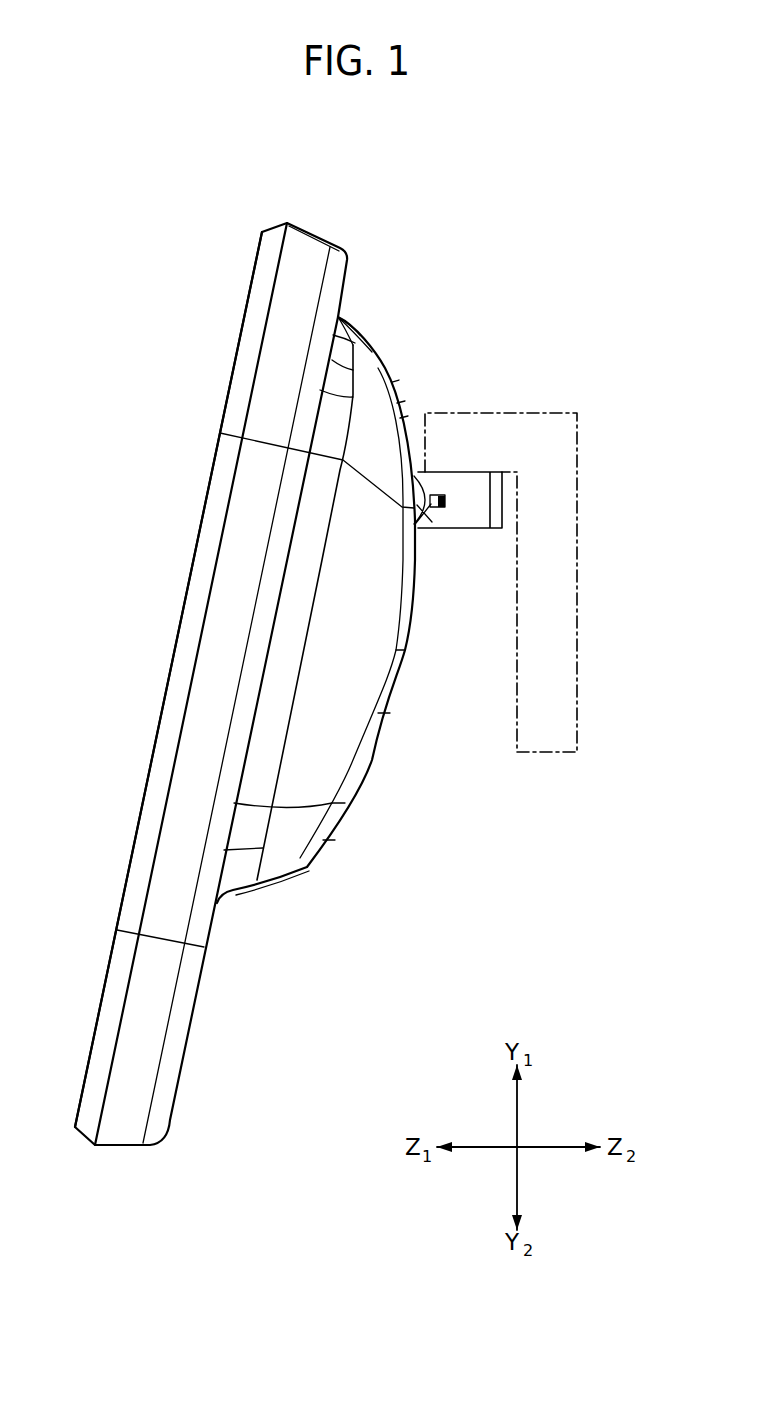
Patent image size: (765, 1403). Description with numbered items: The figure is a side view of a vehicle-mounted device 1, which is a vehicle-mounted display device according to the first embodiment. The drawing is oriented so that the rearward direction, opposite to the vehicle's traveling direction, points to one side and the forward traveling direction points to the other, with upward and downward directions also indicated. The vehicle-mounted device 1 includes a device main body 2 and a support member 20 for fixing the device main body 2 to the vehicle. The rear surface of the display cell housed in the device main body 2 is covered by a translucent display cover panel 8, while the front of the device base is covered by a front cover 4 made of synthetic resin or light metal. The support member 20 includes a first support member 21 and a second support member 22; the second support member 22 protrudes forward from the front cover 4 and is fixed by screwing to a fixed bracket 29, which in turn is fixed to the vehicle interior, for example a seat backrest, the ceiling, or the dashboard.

The vehicle-mounted device 1 is at (424, 218).
The device main body 2 is at (268, 218).
The front cover 4 is at (280, 858).
The display cover panel 8 is at (170, 672).
The support member 20 is at (420, 606).
The first support member 21 is at (428, 510).
The second support member 22 is at (478, 517).
The fixed bracket 29 is at (577, 535).